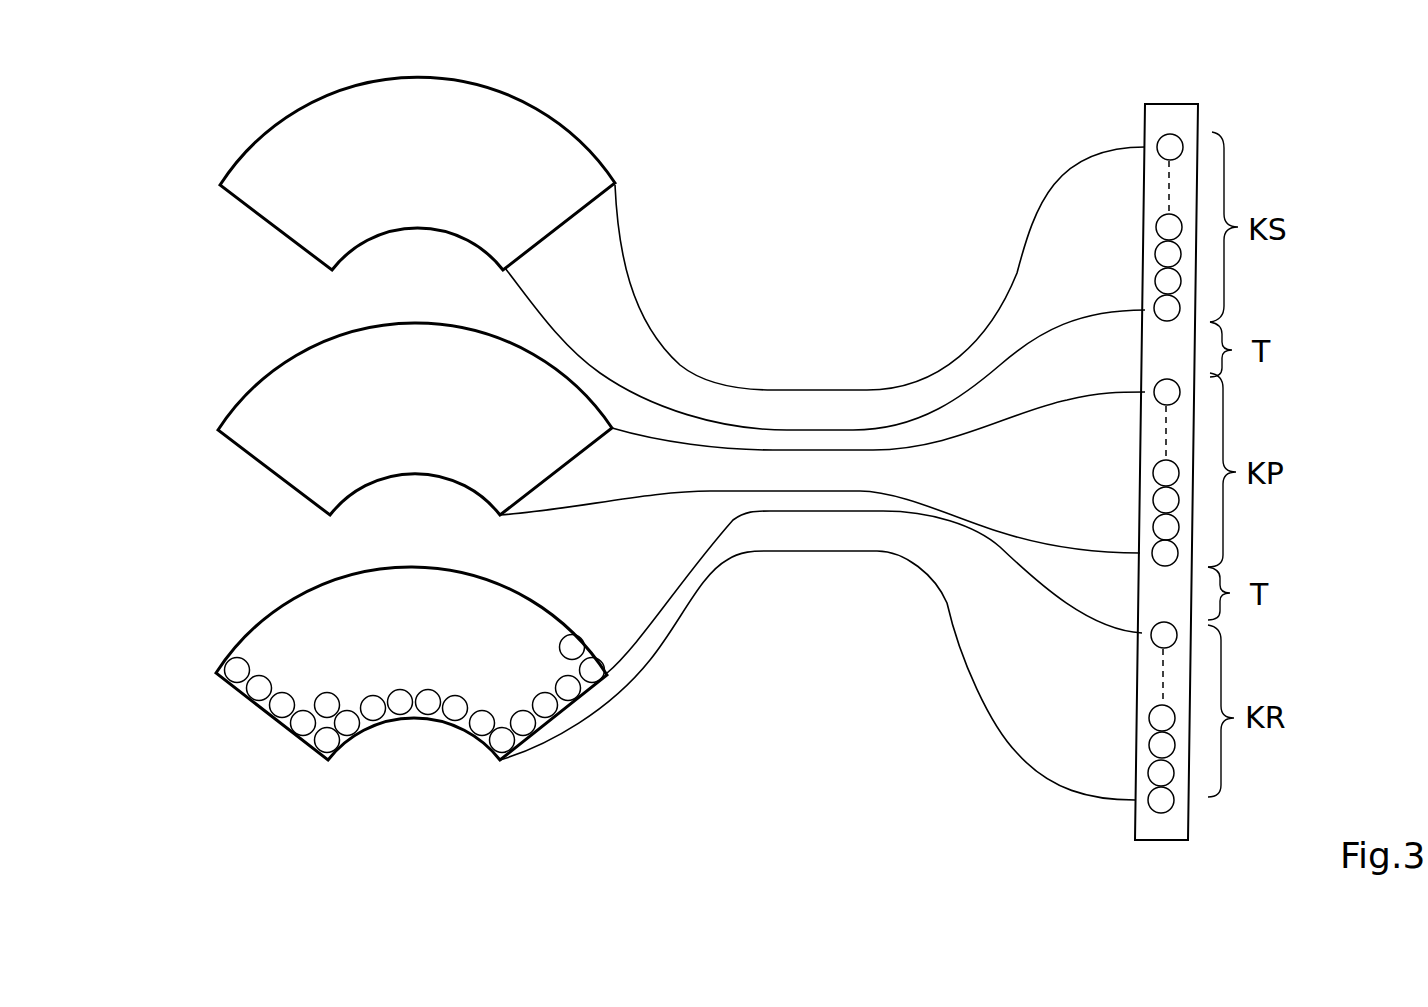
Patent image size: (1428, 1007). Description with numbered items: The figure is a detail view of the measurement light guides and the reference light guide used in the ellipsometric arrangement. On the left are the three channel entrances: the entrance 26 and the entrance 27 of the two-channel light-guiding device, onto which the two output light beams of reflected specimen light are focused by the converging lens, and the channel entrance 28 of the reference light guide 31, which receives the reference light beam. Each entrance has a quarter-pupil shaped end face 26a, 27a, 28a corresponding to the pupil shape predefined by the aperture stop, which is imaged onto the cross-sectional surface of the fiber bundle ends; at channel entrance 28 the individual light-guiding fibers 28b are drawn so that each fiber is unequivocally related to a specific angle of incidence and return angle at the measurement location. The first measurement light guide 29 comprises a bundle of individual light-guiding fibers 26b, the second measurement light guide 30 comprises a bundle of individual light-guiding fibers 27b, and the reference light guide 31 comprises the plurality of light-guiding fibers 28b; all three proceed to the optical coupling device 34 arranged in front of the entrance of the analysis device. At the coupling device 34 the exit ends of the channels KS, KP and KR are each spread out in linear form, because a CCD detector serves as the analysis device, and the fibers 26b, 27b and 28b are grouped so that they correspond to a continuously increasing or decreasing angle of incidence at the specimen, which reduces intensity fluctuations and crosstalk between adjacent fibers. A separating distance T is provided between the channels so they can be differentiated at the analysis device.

The entrance 26 is at (252, 210).
The input end face of first bundle 26a is at (540, 153).
The individual light-guiding fibers 26b is at (1180, 140).
The entrance 27 is at (225, 435).
The input end face of second bundle 27a is at (318, 395).
The individual light-guiding fibers 27b is at (1178, 398).
The channel entrance 28 is at (217, 675).
The input end face of third bundle 28a is at (288, 638).
The light-guiding fibers 28b is at (445, 718).
The measurement light guide 29 is at (773, 403).
The measurement light guide 30 is at (827, 458).
The reference light guide 31 is at (858, 528).
The optical coupling device 34 is at (1148, 112).